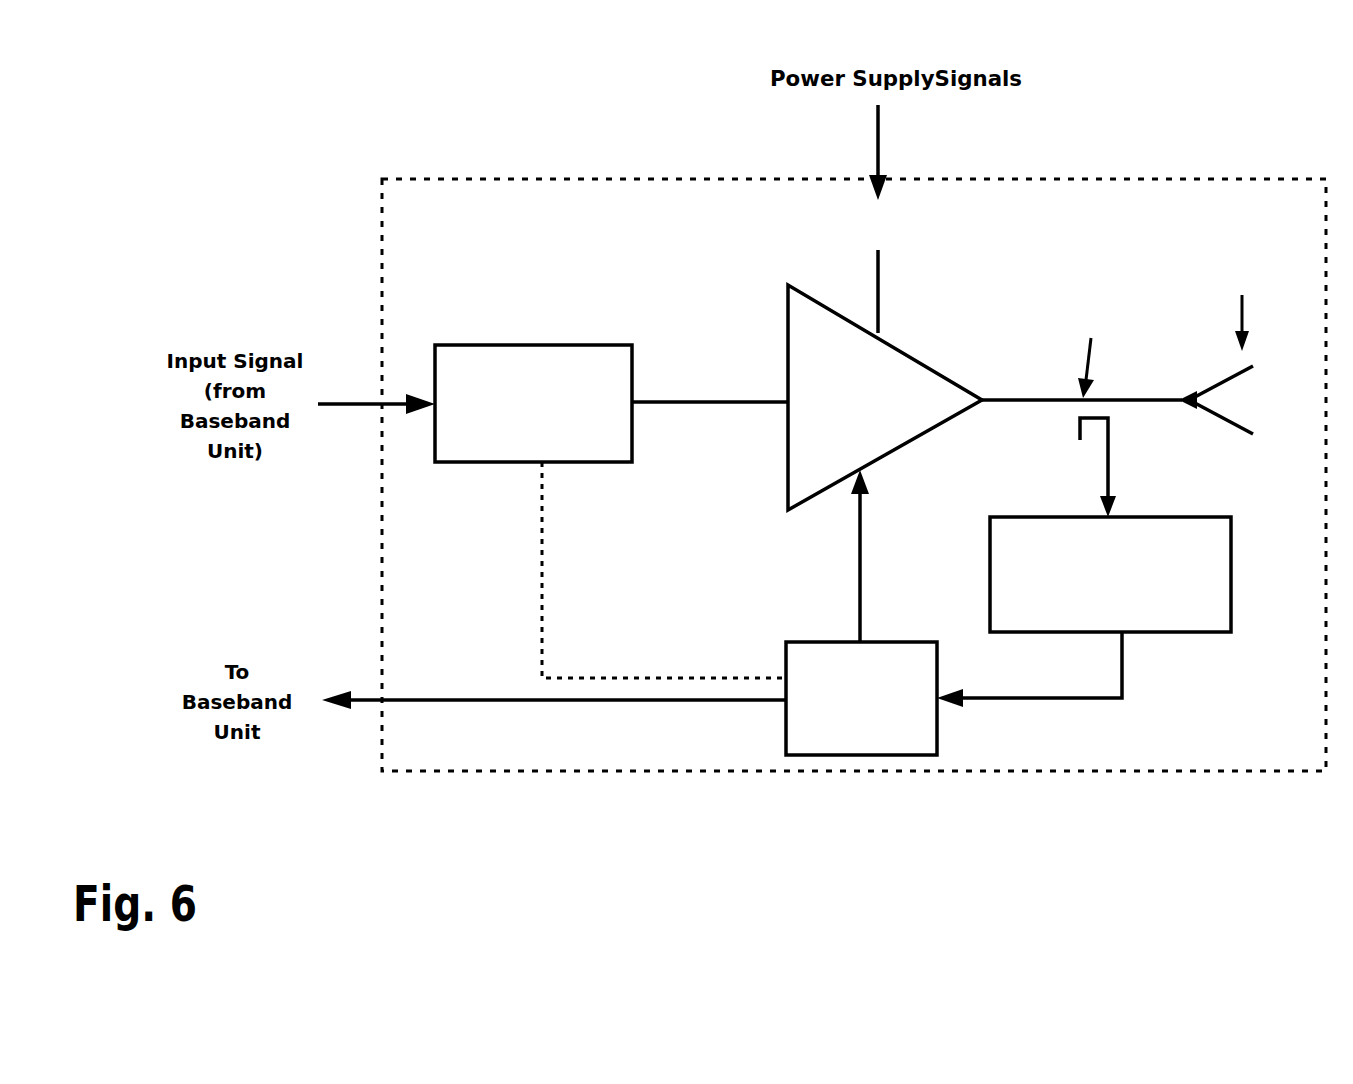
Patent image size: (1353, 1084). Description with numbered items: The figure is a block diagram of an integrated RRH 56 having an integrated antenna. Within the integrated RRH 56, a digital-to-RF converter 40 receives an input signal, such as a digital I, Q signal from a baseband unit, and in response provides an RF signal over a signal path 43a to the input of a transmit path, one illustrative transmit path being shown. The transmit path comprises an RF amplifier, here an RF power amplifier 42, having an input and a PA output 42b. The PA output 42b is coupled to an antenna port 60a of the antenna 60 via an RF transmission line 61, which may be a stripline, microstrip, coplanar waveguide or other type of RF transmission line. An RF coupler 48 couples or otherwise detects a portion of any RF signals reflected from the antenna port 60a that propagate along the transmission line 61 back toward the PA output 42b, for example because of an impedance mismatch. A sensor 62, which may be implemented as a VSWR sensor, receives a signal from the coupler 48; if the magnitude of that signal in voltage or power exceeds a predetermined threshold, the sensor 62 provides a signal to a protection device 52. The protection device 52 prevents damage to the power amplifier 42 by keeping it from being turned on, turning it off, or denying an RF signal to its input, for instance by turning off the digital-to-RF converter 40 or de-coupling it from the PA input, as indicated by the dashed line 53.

The integrated RRH 56 is at (582, 178).
The digital-to-RF converter 40 is at (532, 345).
The RF signal line 43a is at (767, 398).
The RF power amplifier 42 is at (903, 345).
The PA output 42b is at (988, 398).
The RF transmission line 61 is at (1104, 364).
The antenna port 60a is at (1163, 397).
The antenna 60 is at (1257, 318).
The RF coupler 48 is at (1053, 455).
The sensor 62 is at (1231, 572).
The protection device 52 is at (786, 645).
The dashed line 53 is at (541, 560).